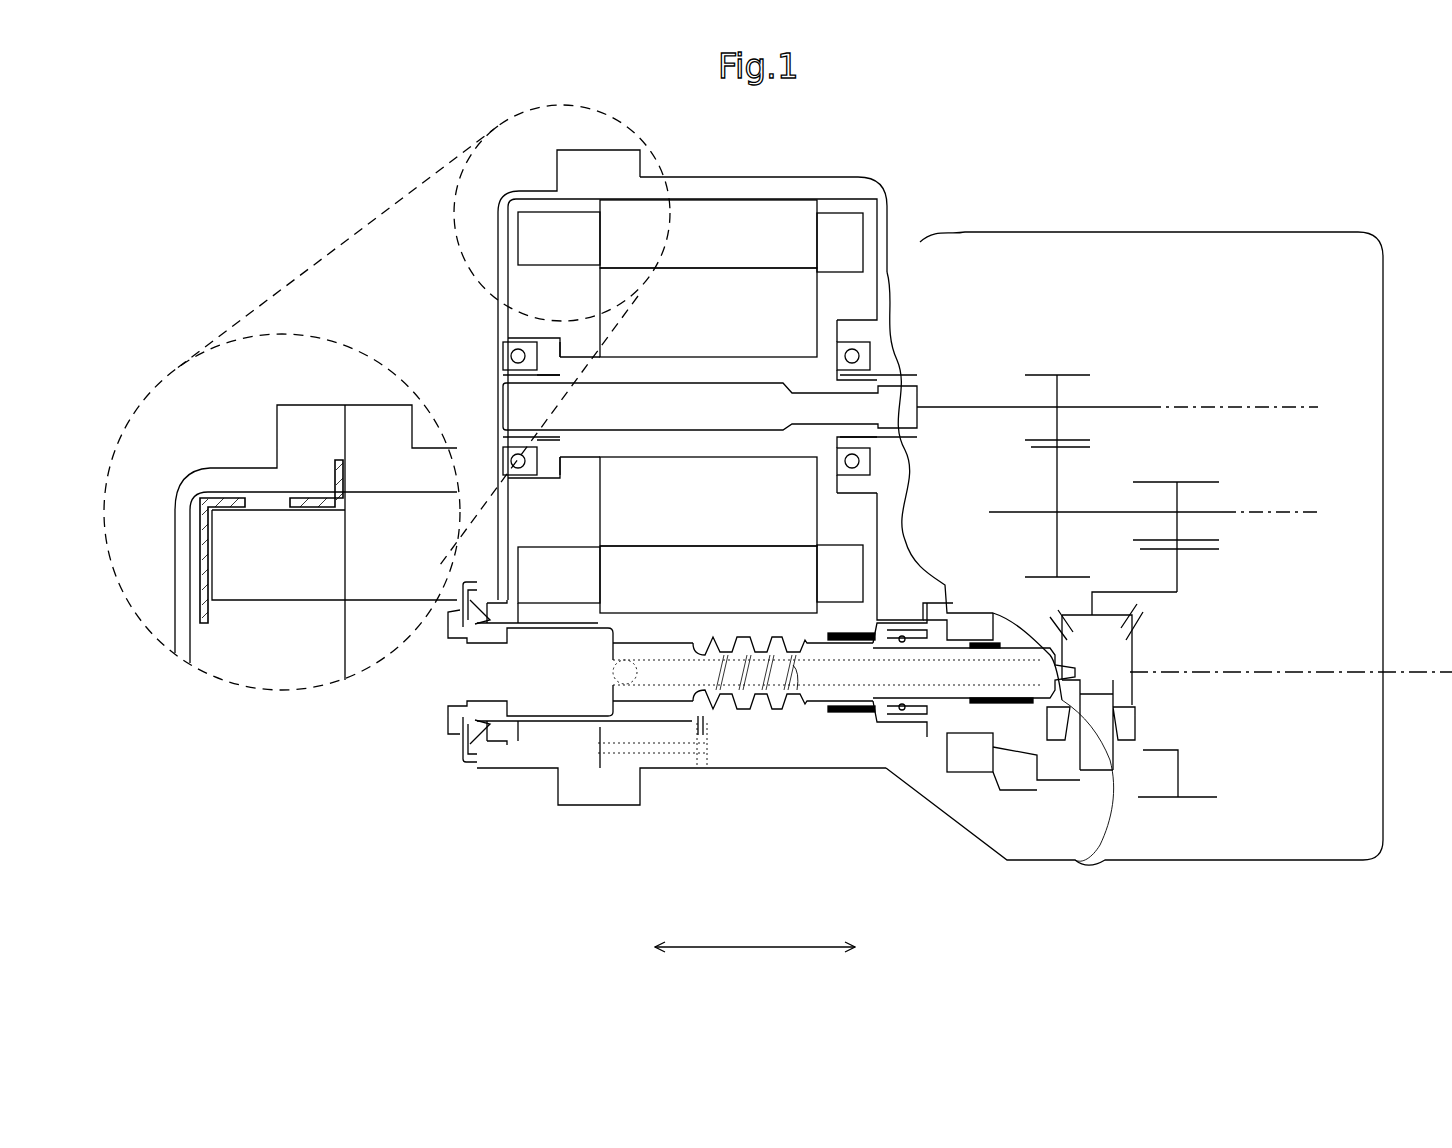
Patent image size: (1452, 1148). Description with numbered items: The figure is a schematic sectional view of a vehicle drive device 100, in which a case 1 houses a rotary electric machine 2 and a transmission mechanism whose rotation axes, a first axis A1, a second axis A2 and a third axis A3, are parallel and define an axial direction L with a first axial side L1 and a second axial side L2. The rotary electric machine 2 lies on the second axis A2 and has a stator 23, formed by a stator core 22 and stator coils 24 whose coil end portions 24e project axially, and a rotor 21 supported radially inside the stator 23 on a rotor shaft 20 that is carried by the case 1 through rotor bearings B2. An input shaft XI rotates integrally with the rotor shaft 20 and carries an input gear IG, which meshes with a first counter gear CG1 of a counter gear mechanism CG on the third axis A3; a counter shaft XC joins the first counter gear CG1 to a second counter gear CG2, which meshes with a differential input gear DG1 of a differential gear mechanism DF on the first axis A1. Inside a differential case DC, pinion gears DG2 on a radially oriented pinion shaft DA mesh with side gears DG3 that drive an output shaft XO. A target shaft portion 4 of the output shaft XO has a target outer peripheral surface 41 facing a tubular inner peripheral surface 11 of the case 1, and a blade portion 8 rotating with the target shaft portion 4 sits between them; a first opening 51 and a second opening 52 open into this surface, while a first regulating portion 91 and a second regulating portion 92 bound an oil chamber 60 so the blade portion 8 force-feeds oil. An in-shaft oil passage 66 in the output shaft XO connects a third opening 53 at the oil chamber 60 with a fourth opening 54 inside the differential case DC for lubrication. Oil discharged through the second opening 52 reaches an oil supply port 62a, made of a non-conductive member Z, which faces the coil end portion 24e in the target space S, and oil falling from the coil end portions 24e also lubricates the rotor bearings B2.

The case 1 is at (965, 830).
The rotary electric machine 2 is at (740, 186).
The target shaft portion 4 is at (738, 718).
The blade portion 8 is at (790, 672).
The tubular inner peripheral surface 11 is at (797, 692).
The rotor shaft 20 is at (650, 372).
The rotor 21 is at (598, 292).
The stator core 22 is at (683, 200).
The stator 23 is at (783, 185).
The stator coil 24 is at (843, 210).
The coil end portion 24e is at (530, 243).
The target outer peripheral surface 41 is at (760, 700).
The first opening 51 is at (790, 626).
The second opening 52 is at (701, 737).
The third opening 53 is at (716, 630).
The fourth opening 54 is at (1077, 677).
The oil chamber 60 is at (707, 670).
The oil supply port 62a is at (265, 500).
The in-shaft oil passage 66 is at (866, 668).
The first regulating portion 91 is at (810, 708).
The second regulating portion 92 is at (700, 628).
The vehicle drive device 100 is at (1082, 165).
The rotor bearing B2 is at (503, 356).
The target space S is at (570, 212).
The non-conductive member Z is at (347, 483).
The input shaft XI is at (933, 407).
The counter shaft XC is at (965, 512).
The output shaft XO is at (940, 690).
The input gear IG is at (1069, 375).
The counter gear mechanism CG is at (1112, 457).
The first counter gear CG1 is at (1037, 444).
The second counter gear CG2 is at (1199, 482).
The differential gear mechanism DF is at (1187, 628).
The differential input gear DG1 is at (1199, 549).
The pinion gear DG2 is at (1080, 613).
The side gear DG3 is at (1133, 648).
The pinion shaft DA is at (1090, 753).
The differential case DC is at (1032, 752).
The first axis A1 is at (1291, 690).
The second axis A2 is at (1139, 407).
The third axis A3 is at (1175, 512).
The axial direction L is at (755, 925).
The first axial side L1 is at (880, 947).
The second axial side L2 is at (627, 947).